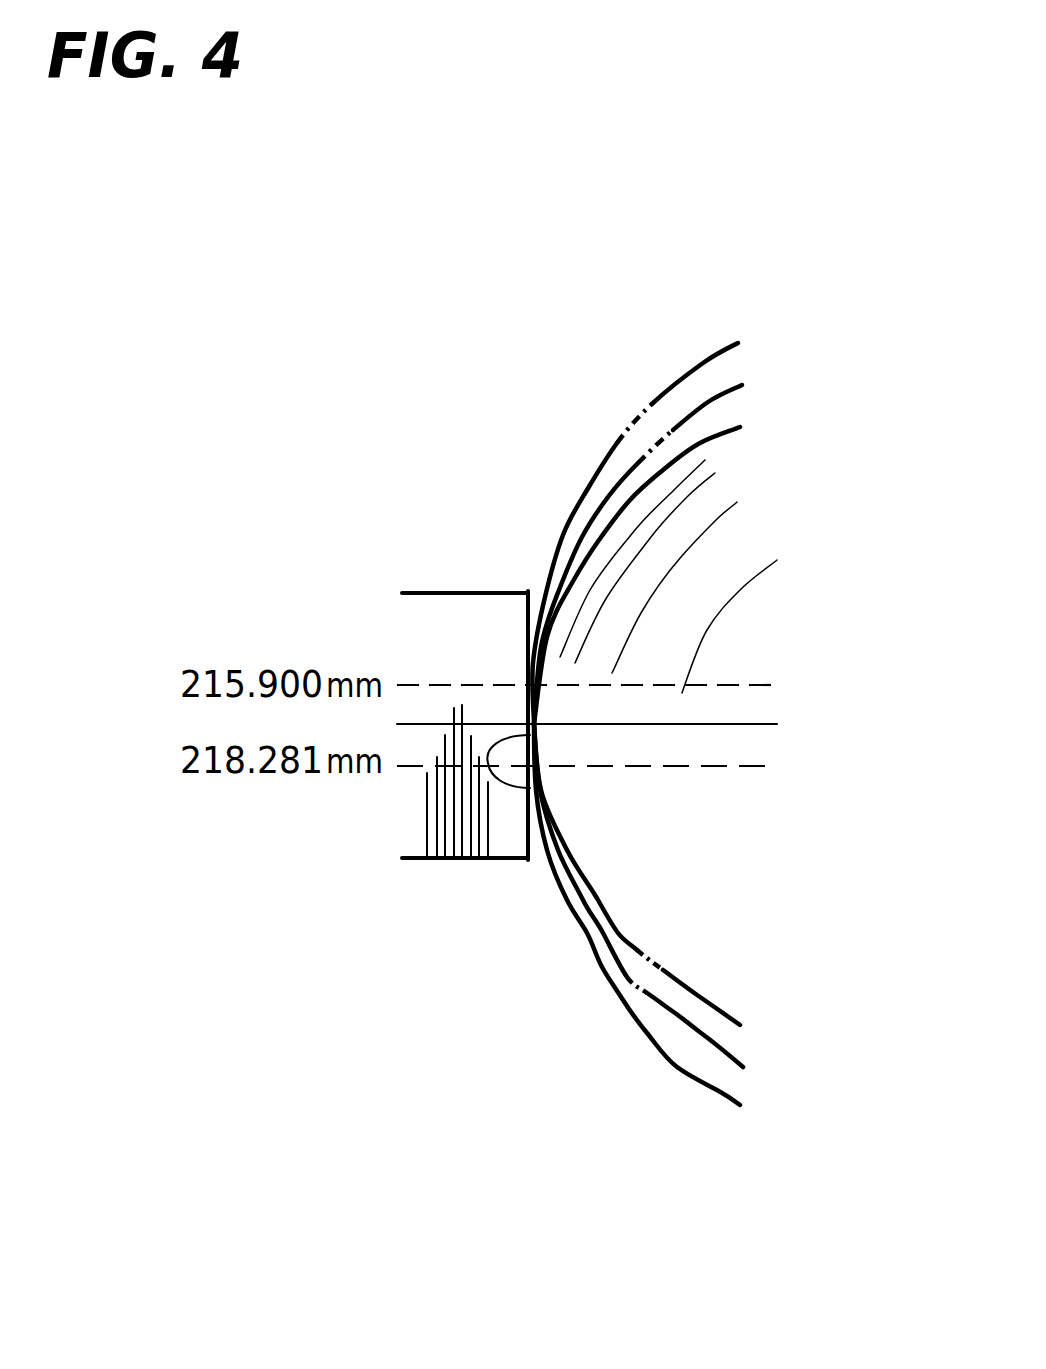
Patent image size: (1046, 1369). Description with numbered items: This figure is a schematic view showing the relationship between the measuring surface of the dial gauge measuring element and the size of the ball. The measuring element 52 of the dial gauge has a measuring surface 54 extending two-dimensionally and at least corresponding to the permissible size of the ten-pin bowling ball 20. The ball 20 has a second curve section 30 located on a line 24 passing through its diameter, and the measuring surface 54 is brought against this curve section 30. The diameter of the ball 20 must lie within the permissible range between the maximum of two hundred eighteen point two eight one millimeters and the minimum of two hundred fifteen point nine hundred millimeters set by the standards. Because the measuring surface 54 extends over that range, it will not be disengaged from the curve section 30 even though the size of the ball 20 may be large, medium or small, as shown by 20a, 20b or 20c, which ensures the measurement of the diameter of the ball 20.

The ten-pin bowling ball 20 is at (650, 1047).
The large ball size 20a is at (727, 443).
The medium ball size 20b is at (728, 397).
The small ball size 20c is at (720, 360).
The line 24 is at (705, 725).
The second curve section 30 is at (528, 789).
The measuring element 52 is at (465, 592).
The measuring surface 54 is at (537, 862).